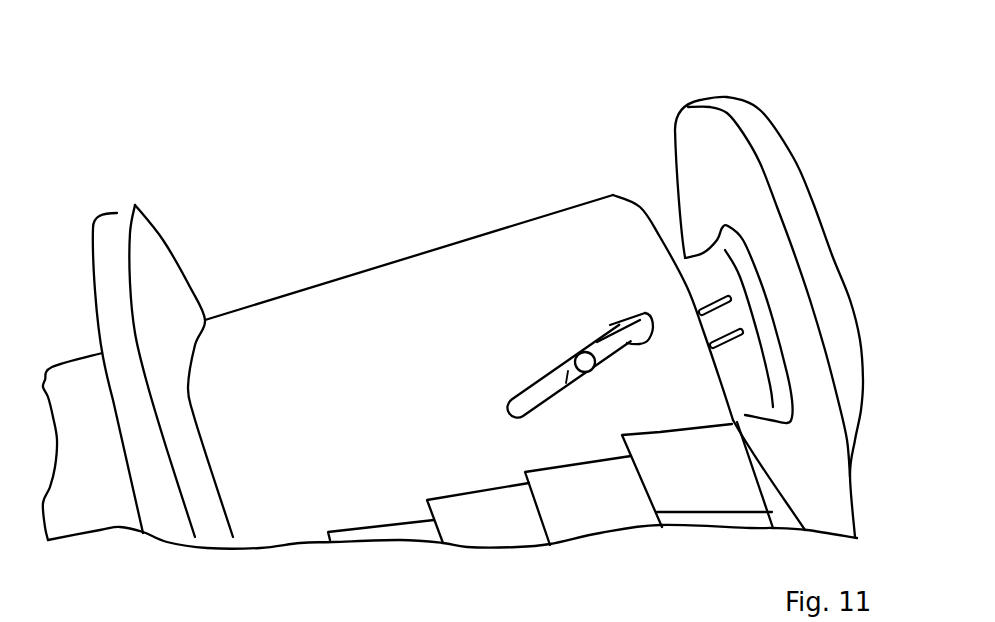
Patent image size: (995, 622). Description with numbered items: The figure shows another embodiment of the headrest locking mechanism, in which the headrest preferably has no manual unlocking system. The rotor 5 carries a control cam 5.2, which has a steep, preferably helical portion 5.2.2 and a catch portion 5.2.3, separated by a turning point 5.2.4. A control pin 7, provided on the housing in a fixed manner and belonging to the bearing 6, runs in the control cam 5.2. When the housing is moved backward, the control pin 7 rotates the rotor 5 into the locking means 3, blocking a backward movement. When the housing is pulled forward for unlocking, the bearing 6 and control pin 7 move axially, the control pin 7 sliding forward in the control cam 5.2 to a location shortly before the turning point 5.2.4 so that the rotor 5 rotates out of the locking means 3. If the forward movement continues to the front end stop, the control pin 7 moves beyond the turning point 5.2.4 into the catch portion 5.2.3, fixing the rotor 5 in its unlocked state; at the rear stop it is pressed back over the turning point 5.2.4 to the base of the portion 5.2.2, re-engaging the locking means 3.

The locking means 3 is at (105, 250).
The rotor 5 is at (356, 394).
The control cam 5.2 is at (499, 364).
The steep helical portion 5.2.2 is at (535, 384).
The catch portion 5.2.3 is at (647, 322).
The turning point 5.2.4 is at (626, 318).
The bearing 6 is at (727, 103).
The control pin 7 is at (580, 352).